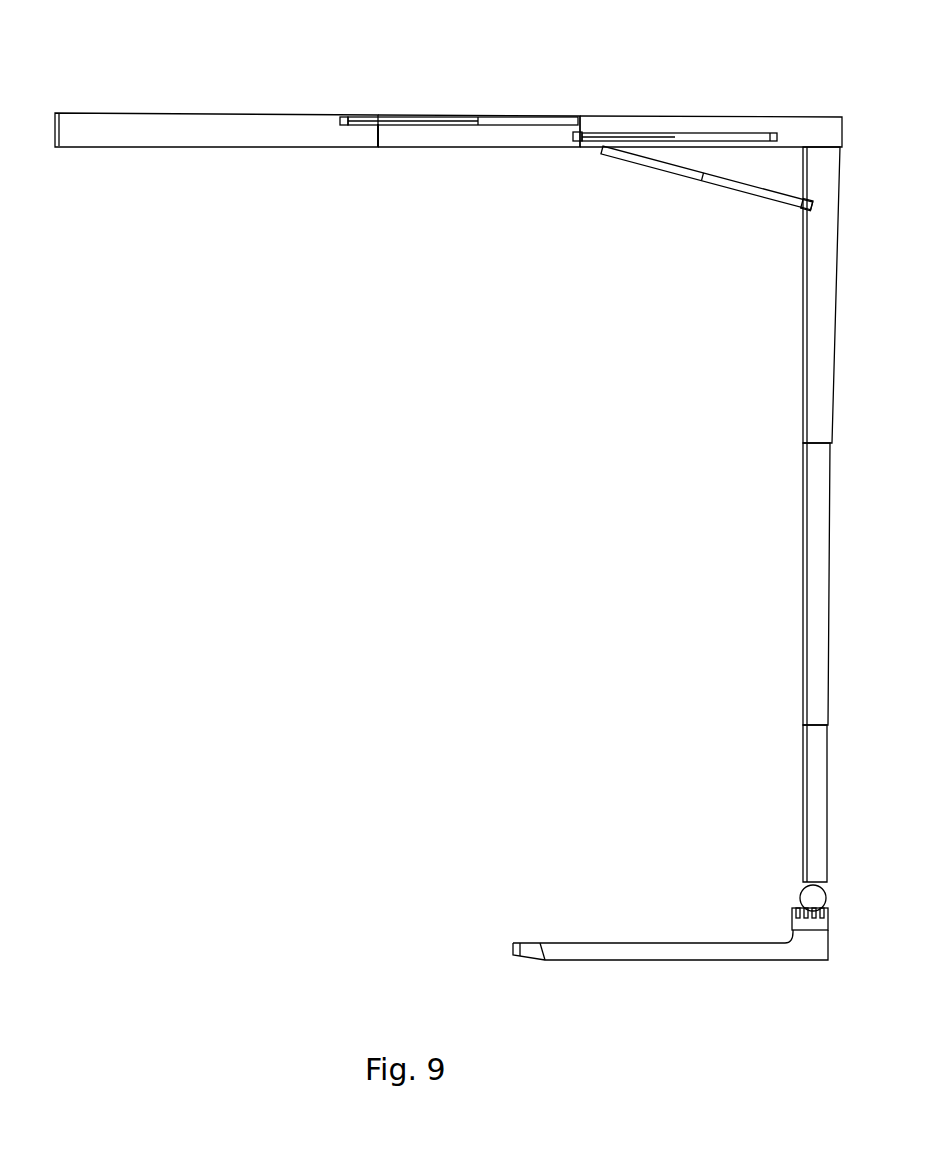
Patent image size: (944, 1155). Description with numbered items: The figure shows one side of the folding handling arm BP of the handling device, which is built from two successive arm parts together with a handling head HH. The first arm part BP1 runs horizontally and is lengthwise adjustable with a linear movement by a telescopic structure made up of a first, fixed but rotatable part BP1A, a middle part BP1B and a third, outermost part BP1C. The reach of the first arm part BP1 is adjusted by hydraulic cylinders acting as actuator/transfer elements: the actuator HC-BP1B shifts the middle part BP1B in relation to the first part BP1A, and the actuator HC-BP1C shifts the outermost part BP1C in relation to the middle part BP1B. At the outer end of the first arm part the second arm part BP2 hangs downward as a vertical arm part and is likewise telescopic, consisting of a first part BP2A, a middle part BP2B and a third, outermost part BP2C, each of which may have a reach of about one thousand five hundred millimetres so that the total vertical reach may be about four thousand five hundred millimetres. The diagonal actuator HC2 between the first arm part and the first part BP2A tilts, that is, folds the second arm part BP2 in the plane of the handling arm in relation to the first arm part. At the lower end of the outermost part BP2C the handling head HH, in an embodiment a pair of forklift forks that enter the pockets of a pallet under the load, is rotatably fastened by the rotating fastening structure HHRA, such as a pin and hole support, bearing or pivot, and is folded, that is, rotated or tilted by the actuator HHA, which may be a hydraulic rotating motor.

The folding handling arm BP is at (448, 452).
The first arm part BP1 is at (448, 162).
The first part of the first arm part BP1A is at (245, 148).
The middle part of the first arm part BP1B is at (400, 148).
The third outermost part of the first arm part BP1C is at (655, 117).
The hydraulic cylinder HC-BP1B is at (418, 116).
The hydraulic cylinder HC-BP1C is at (602, 133).
The actuator HC2 is at (660, 168).
The second arm part BP2 is at (715, 514).
The first part of the second arm part BP2A is at (803, 325).
The middle part of the second arm part BP2B is at (803, 607).
The third outermost part of the second arm part BP2C is at (795, 785).
The handling head HH is at (670, 939).
The actuator HHA is at (793, 922).
The rotating fastening structure HHRA is at (815, 902).